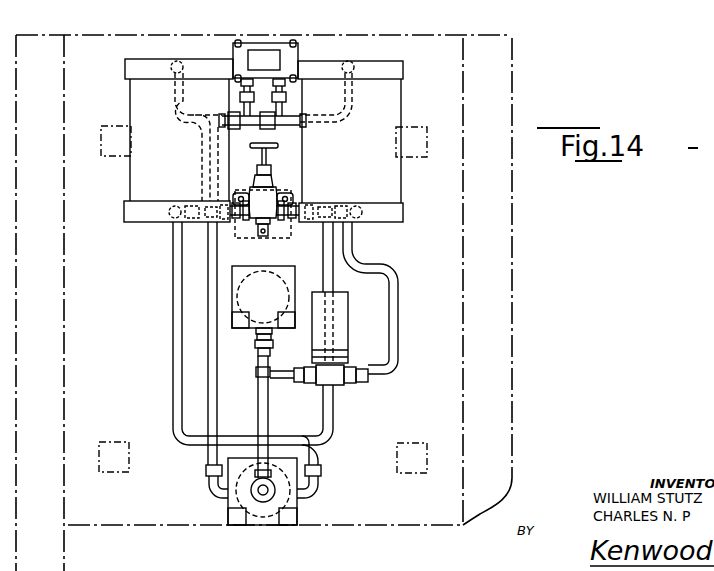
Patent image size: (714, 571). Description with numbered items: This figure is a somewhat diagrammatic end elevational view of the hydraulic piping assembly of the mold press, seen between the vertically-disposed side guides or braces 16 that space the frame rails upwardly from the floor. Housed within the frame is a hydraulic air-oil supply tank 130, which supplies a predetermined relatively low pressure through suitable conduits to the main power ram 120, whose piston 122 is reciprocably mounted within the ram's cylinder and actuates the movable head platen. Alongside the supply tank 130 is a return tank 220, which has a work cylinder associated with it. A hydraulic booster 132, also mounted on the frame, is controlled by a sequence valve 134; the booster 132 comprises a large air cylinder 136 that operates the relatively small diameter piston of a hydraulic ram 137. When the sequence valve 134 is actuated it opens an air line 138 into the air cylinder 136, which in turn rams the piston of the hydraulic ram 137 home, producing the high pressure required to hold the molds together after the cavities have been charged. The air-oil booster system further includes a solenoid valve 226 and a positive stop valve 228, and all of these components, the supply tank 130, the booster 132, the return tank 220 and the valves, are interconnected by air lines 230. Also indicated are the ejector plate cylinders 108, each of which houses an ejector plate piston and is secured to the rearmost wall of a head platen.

The side guides or braces 16 is at (50, 37).
The ejector plate cylinder 108 is at (104, 126).
The main power ram 120 is at (263, 266).
The piston 122 is at (292, 273).
The hydraulic air-oil supply tank 130 is at (184, 145).
The hydraulic booster 132 is at (262, 526).
The sequence valve 134 is at (267, 190).
The air cylinder 136 is at (228, 505).
The hydraulic ram 137 is at (276, 494).
The air line 138 is at (258, 374).
The return tank 220 is at (372, 145).
The solenoid valve 226 is at (265, 43).
The positive stop valve 228 is at (348, 328).
The air lines 230 is at (357, 70).